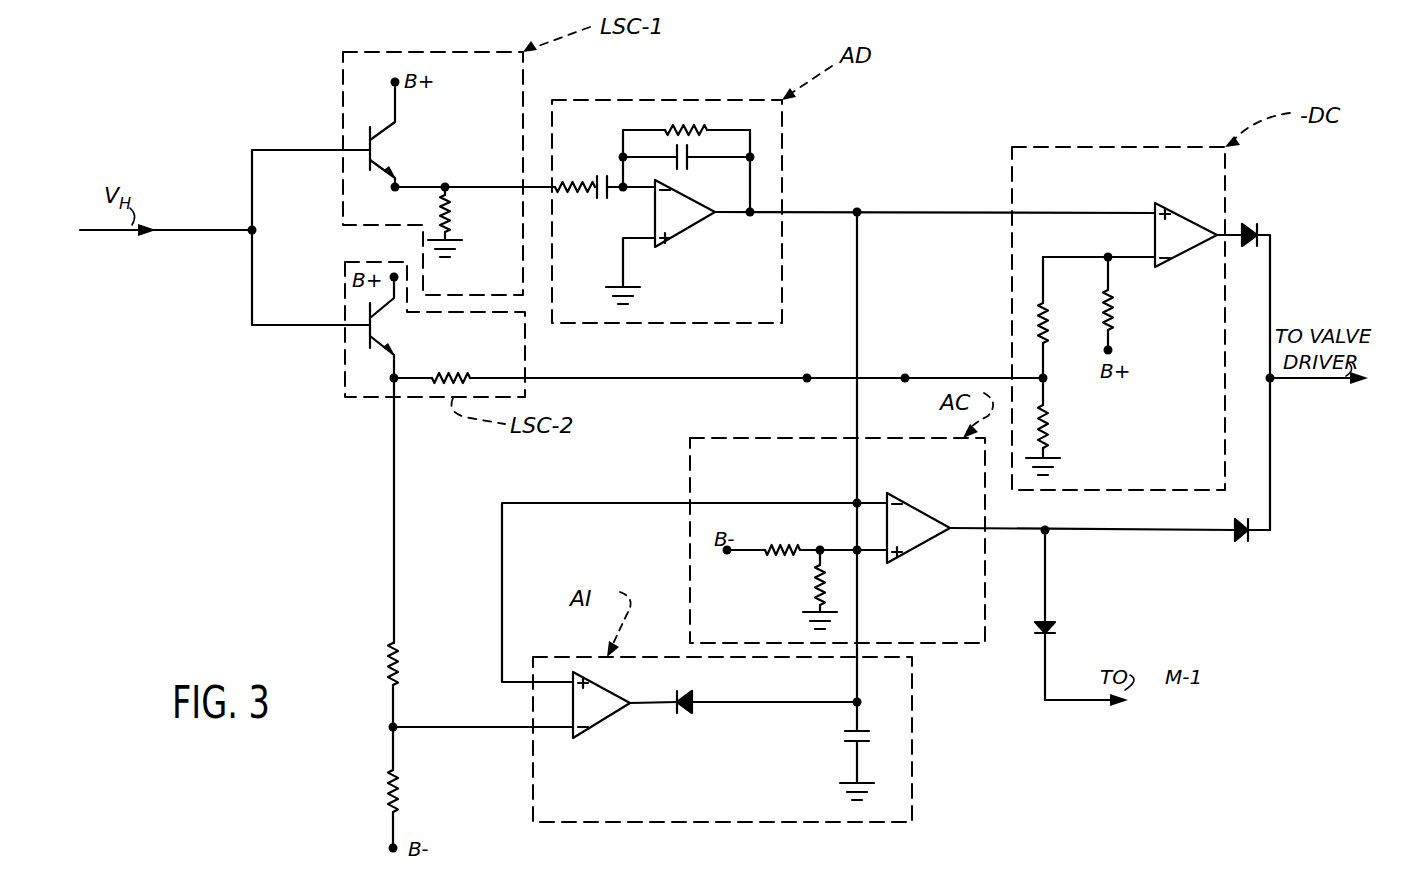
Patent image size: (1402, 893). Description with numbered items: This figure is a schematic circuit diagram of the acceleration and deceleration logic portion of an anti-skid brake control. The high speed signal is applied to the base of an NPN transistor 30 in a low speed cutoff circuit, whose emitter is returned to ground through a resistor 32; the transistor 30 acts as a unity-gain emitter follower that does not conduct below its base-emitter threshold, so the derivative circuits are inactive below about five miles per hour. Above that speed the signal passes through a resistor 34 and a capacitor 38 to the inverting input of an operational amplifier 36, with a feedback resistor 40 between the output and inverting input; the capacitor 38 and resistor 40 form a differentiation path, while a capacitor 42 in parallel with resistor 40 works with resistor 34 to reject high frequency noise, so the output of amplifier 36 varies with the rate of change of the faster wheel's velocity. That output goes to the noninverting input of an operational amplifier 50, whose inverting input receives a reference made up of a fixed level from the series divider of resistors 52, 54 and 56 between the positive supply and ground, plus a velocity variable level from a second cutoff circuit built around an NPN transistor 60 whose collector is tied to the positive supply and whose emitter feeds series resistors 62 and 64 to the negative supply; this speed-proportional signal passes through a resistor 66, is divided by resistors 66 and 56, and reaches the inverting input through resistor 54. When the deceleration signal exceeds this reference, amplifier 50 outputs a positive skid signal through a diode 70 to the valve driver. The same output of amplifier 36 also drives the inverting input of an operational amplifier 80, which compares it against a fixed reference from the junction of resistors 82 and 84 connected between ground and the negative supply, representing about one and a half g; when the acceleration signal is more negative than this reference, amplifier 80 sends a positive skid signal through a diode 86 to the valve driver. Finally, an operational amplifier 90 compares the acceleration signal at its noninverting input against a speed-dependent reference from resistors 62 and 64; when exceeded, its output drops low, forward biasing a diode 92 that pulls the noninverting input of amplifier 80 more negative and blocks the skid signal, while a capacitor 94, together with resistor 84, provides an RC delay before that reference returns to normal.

The NPN transistor 30 is at (392, 151).
The resistor 32 is at (452, 210).
The resistor 34 is at (566, 191).
The operational amplifier 36 is at (690, 217).
The capacitor 38 is at (598, 174).
The feedback resistor 40 is at (695, 132).
The capacitor 42 is at (688, 163).
The operational amplifier 50 is at (1185, 220).
The resistor 52 is at (1113, 308).
The resistor 54 is at (1049, 325).
The resistor 56 is at (1050, 425).
The NPN transistor 60 is at (383, 318).
The resistor 62 is at (399, 654).
The resistor 64 is at (399, 784).
The resistor 66 is at (448, 372).
The diode 70 is at (1260, 235).
The operational amplifier 80 is at (925, 515).
The resistor 82 is at (795, 546).
The resistor 84 is at (816, 580).
The diode 86 is at (1250, 545).
The operational amplifier 90 is at (600, 697).
The diode 92 is at (678, 717).
The capacitor 94 is at (848, 738).